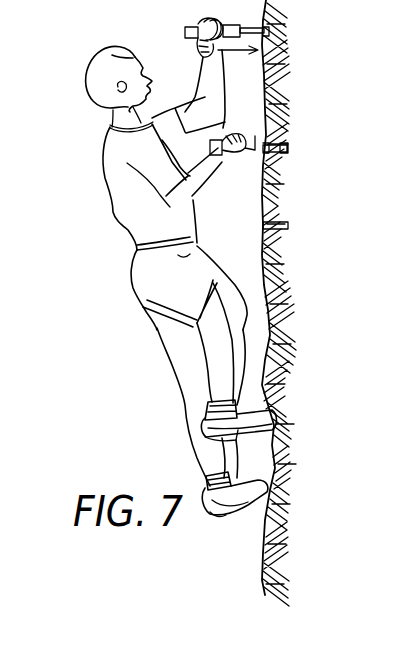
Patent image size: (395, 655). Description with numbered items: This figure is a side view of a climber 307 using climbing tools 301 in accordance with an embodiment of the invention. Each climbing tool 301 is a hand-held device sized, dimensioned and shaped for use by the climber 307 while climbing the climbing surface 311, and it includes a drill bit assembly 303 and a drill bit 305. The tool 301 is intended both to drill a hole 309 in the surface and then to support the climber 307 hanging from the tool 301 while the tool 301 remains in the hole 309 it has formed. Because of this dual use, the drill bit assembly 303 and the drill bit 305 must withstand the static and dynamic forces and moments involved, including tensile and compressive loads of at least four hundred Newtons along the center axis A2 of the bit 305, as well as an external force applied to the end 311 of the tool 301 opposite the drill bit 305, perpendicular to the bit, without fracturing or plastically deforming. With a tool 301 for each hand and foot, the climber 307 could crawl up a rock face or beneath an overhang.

The center axis A2 is at (185, 33).
The climbing tool 301 is at (252, 132).
The drill bit assembly 303 is at (273, 140).
The drill bit 305 is at (280, 148).
The climber 307 is at (120, 222).
The hole 309 is at (278, 200).
The climbing surface 311 is at (188, 123).